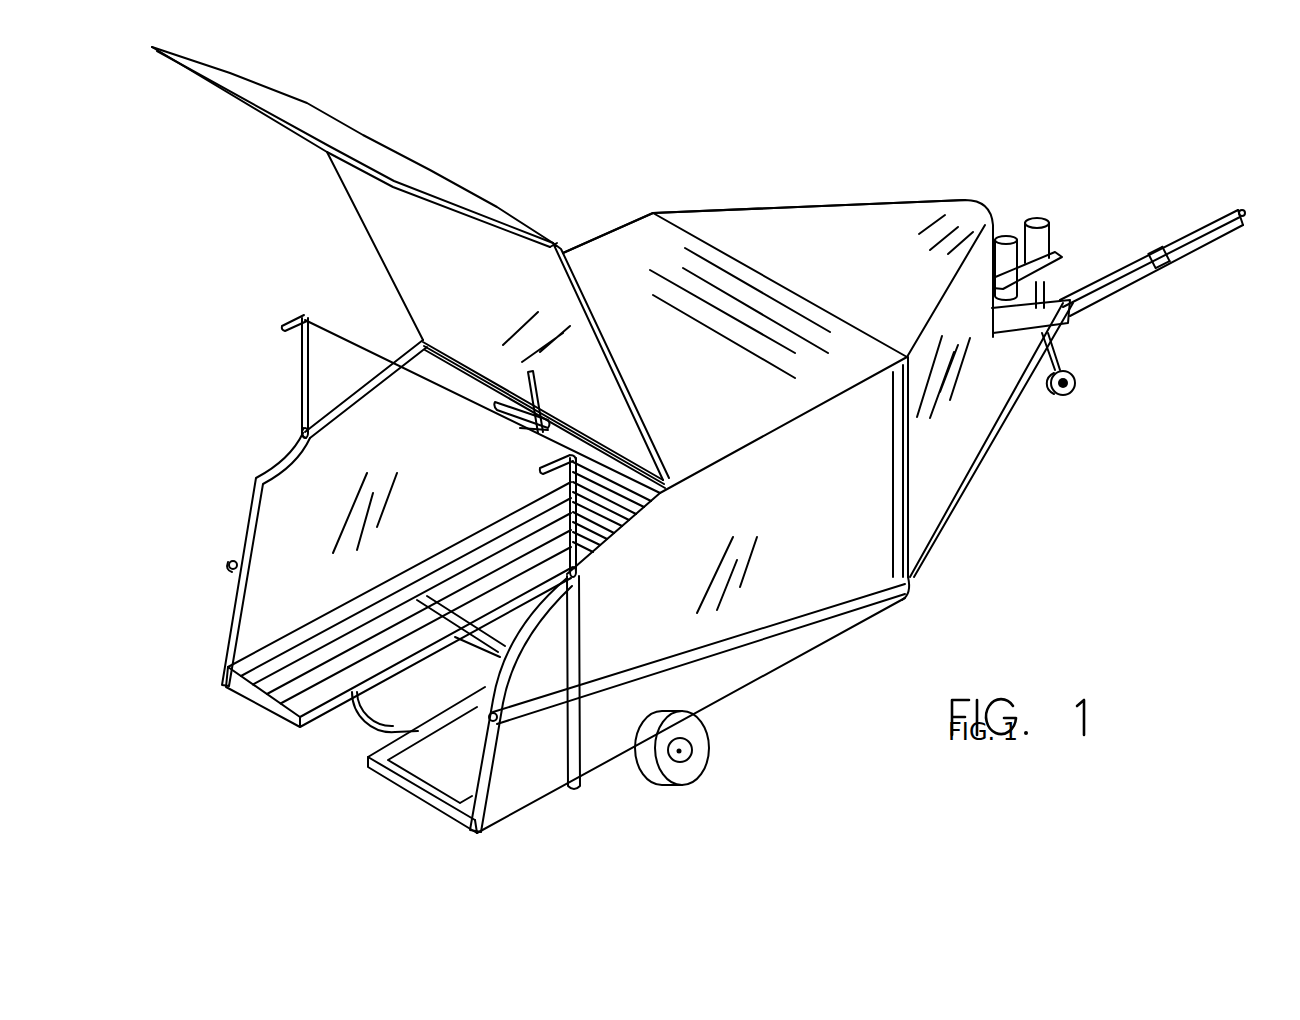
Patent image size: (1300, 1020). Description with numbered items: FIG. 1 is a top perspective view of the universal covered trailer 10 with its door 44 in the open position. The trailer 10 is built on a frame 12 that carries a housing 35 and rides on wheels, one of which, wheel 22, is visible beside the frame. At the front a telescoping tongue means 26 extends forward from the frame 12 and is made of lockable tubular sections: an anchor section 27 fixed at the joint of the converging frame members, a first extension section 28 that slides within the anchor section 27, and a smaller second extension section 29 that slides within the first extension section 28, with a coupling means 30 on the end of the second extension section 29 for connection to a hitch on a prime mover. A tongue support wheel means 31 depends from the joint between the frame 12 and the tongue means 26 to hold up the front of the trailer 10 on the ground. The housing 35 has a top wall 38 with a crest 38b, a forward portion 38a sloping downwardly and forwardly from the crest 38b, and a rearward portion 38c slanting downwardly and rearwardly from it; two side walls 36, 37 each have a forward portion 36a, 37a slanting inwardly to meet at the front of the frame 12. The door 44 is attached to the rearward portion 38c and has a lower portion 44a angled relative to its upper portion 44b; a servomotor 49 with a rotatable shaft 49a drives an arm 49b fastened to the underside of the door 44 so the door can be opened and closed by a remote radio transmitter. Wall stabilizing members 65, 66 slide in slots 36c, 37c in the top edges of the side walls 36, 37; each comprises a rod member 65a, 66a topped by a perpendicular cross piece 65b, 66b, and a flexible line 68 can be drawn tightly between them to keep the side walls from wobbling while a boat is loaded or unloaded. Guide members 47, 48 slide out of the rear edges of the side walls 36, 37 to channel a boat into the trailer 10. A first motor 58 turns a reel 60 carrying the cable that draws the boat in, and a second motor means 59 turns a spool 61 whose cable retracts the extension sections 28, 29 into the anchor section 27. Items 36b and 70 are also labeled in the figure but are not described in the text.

The universal covered trailer 10 is at (210, 331).
The frame 12 is at (375, 808).
The wheel 22 is at (670, 773).
The telescoping tongue means 26 is at (1208, 294).
The anchor section 27 is at (1075, 305).
The first lockable extension section 28 is at (1150, 258).
The second extension section 29 is at (1160, 253).
The coupling means 30 is at (1238, 212).
The tongue support wheel means 31 is at (1068, 384).
The housing 35 is at (624, 184).
The side wall 36 is at (812, 538).
The forward portion of side wall 36a is at (937, 473).
The frame rail 36b is at (230, 567).
The slot 36c is at (581, 574).
The side wall 37 is at (333, 410).
The forward portion of side wall 37a is at (218, 638).
The slot 37c is at (300, 428).
The top wall 38 is at (607, 258).
The forward portion of top wall 38a is at (823, 220).
The crest 38b is at (777, 278).
The rearward portion of top wall 38c is at (690, 462).
The door 44 is at (430, 267).
The lower portion of door 44a is at (362, 145).
The upper portion of door 44b is at (622, 367).
The guide member 47 is at (240, 562).
The guide member 48 is at (495, 722).
The servomotor 49 is at (500, 418).
The rotatable shaft 49a is at (548, 423).
The arm 49b is at (536, 392).
The first motor 58 is at (1003, 236).
The second motor means 59 is at (1040, 221).
The reel 60 is at (1007, 298).
The spool 61 is at (1045, 273).
The wall stabilizing member 65 is at (316, 428).
The rod member 65a is at (303, 365).
The cross piece 65b is at (297, 323).
The wall stabilizing member 66 is at (580, 548).
The rod member 66a is at (580, 528).
The cross piece 66b is at (548, 464).
The flexible line 68 is at (442, 396).
The caster strut 70 is at (1057, 327).